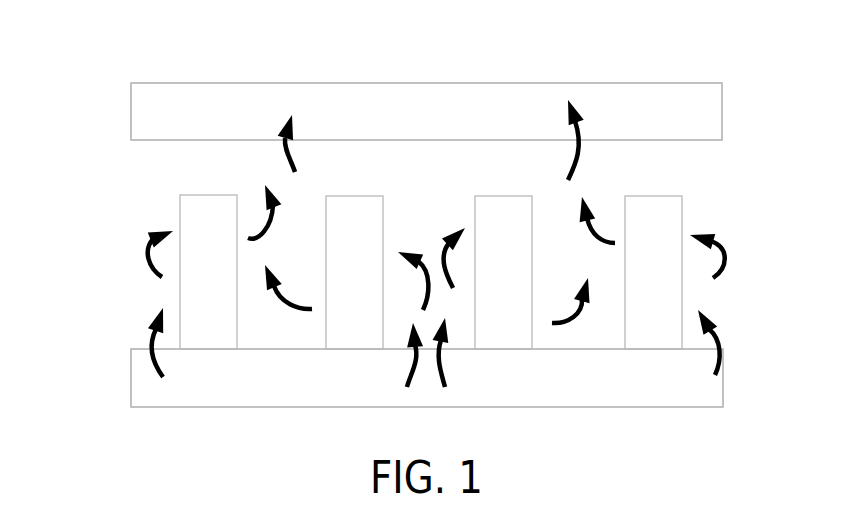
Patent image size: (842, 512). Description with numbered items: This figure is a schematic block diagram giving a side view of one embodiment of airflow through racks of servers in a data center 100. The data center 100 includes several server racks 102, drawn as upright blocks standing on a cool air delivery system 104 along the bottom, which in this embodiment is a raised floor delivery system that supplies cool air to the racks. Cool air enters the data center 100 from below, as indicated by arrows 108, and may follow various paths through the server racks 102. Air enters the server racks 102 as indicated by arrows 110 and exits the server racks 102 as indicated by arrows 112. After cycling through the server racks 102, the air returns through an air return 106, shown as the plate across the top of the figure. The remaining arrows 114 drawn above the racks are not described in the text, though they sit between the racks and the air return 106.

The data center 100 is at (392, 205).
The server racks 102 is at (180, 212).
The cool air delivery system 104 is at (131, 378).
The air return 106 is at (130, 110).
The arrows 108 is at (152, 336).
The arrows 110 is at (150, 244).
The arrows 112 is at (275, 228).
The outgoing airflow 114 is at (284, 143).